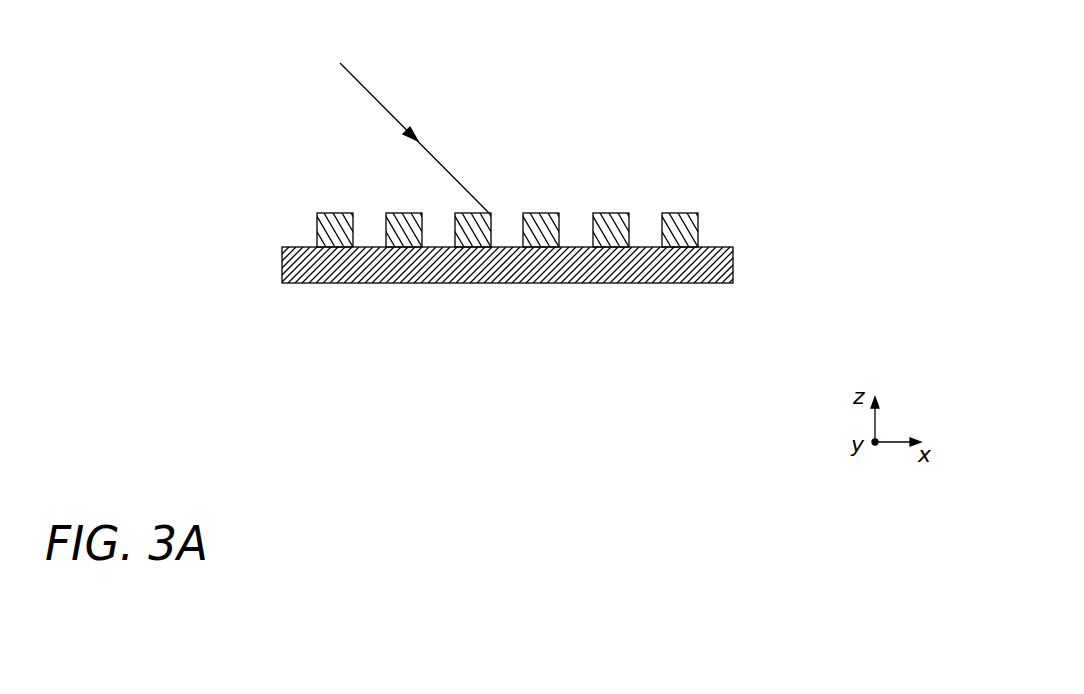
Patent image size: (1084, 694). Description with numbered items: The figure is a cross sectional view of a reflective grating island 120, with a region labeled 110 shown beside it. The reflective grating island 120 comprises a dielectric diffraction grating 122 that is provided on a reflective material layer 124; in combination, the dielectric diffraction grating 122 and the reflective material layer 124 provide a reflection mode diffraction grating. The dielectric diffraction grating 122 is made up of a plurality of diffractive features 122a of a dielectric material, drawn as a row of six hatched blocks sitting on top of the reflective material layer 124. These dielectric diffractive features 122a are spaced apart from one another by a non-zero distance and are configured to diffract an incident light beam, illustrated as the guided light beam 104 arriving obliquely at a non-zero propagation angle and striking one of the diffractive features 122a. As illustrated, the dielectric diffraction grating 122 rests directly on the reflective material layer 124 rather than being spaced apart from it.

The guided light beam 104 is at (375, 95).
The substrate region 110 is at (262, 183).
The reflective grating island 120 is at (792, 75).
The dielectric diffraction grating 122 is at (727, 225).
The diffractive features 122a is at (682, 213).
The reflective material layer 124 is at (733, 263).